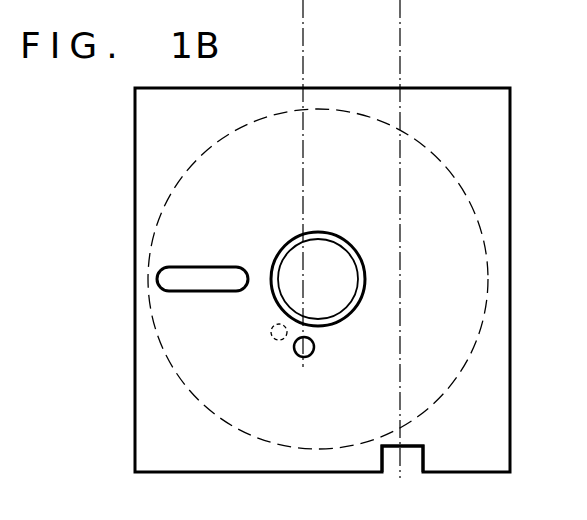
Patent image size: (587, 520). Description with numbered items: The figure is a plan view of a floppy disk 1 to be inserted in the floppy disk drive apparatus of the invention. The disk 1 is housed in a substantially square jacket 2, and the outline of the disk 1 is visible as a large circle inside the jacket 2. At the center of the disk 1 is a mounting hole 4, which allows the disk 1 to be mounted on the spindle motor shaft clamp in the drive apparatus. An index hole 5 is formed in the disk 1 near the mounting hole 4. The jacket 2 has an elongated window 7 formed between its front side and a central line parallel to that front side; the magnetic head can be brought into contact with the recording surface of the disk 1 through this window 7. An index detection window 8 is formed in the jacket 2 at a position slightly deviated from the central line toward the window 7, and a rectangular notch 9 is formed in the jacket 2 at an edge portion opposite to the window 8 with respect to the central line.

The floppy disk 1 is at (150, 236).
The jacket 2 is at (135, 418).
The mounting hole 4 is at (350, 240).
The index hole 5 is at (271, 332).
The elongated window 7 is at (220, 267).
The index detection window 8 is at (297, 355).
The rectangular notch 9 is at (410, 455).